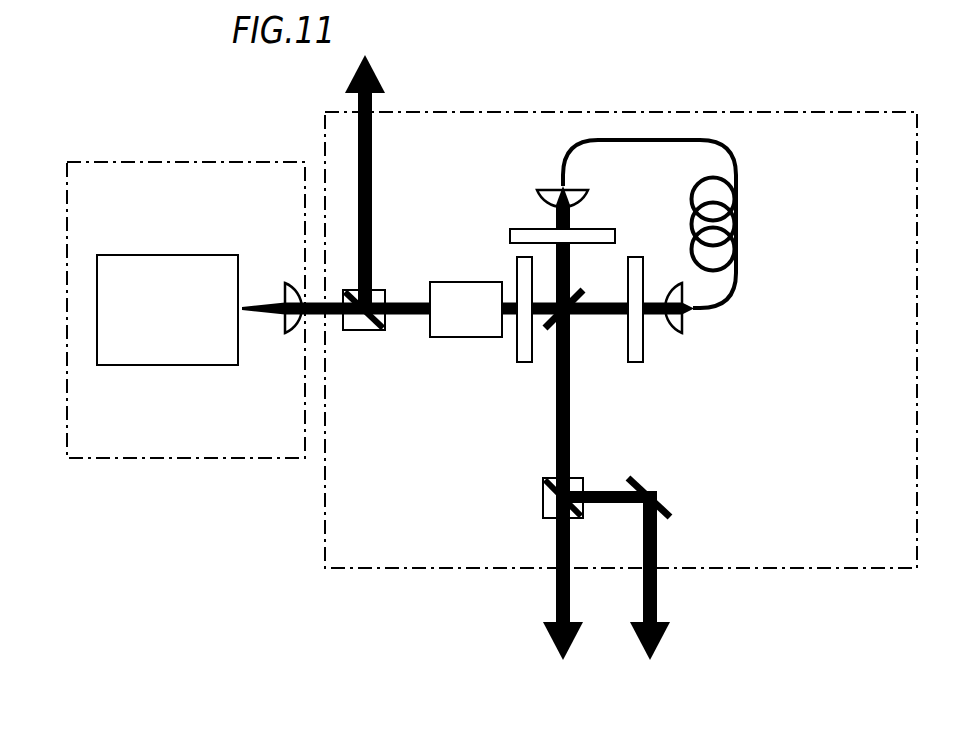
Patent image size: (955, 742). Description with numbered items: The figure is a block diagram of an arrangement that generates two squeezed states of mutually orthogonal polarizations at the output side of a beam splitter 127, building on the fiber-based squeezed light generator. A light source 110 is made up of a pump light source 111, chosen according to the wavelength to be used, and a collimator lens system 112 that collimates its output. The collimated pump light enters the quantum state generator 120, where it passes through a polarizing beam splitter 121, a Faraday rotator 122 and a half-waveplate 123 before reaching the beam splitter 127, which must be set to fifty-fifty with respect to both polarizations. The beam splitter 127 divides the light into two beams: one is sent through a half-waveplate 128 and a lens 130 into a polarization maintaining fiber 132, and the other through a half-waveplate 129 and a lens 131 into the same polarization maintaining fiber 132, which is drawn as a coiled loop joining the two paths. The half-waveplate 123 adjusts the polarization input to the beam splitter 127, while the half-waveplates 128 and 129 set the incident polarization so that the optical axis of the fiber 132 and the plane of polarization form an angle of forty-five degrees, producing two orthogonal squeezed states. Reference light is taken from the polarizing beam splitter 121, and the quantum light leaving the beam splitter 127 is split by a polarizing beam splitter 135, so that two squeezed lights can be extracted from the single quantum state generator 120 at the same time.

The light source 110 is at (268, 206).
The pump light source 111 is at (113, 270).
The collimator lens system 112 is at (288, 336).
The quantum state generator 120 is at (888, 154).
The polarizing beam splitter 121 is at (374, 331).
The Faraday rotator 122 is at (470, 284).
The half-waveplate 123 is at (522, 363).
The beam splitter 127 is at (571, 326).
The half-waveplate 128 is at (637, 363).
The half-waveplate 129 is at (517, 228).
The lens 130 is at (687, 324).
The lens 131 is at (586, 187).
The polarization maintaining fiber 132 is at (740, 228).
The polarizing beam splitter 135 is at (550, 503).